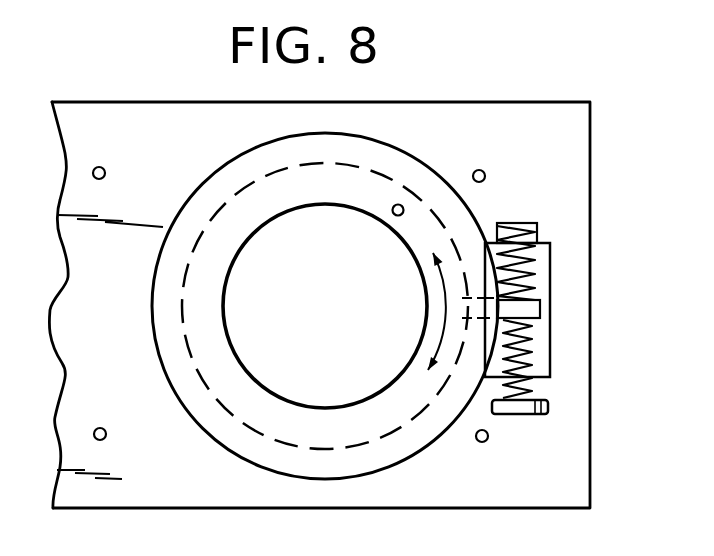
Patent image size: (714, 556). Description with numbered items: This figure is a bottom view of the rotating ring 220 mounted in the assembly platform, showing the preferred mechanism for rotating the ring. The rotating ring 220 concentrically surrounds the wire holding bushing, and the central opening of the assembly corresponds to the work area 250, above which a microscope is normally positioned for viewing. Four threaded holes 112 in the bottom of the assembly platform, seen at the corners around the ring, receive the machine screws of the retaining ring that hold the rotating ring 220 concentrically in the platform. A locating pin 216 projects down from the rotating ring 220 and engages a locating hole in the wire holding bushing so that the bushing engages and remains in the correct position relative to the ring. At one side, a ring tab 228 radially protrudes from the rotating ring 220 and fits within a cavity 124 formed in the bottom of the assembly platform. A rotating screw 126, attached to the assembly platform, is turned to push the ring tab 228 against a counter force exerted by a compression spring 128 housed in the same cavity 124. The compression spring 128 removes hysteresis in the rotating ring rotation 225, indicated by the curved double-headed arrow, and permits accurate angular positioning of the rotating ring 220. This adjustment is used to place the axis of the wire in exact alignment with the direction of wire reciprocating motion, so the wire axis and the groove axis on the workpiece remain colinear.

The threaded holes 112 is at (508, 143).
The cavity 124 is at (548, 362).
The rotating screw 126 is at (548, 407).
The compression spring 128 is at (545, 267).
The locating pin 216 is at (396, 216).
The rotating ring 220 is at (140, 332).
The rotating ring rotation 225 is at (445, 307).
The ring tab 228 is at (538, 309).
The work area 250 is at (250, 340).